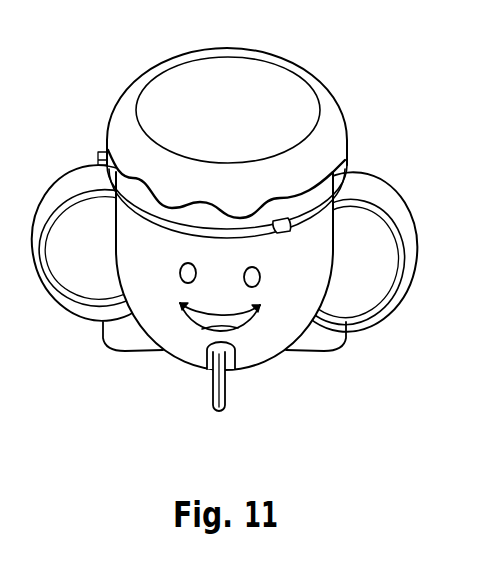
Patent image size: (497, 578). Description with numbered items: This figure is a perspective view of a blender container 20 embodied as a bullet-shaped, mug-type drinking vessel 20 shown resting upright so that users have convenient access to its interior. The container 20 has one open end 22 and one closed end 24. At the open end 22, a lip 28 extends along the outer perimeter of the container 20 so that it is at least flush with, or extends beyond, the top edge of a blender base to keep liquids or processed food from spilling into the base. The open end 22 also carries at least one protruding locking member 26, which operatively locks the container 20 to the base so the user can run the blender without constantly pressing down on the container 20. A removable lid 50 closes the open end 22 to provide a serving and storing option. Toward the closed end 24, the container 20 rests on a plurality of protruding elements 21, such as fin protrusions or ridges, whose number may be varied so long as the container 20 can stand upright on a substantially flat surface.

The blender container 20 is at (135, 273).
The protruding element 21 is at (226, 395).
The open end 22 is at (103, 200).
The closed end 24 is at (258, 357).
The locking member 26 is at (290, 227).
The lip 28 is at (353, 201).
The removable lid 50 is at (330, 95).